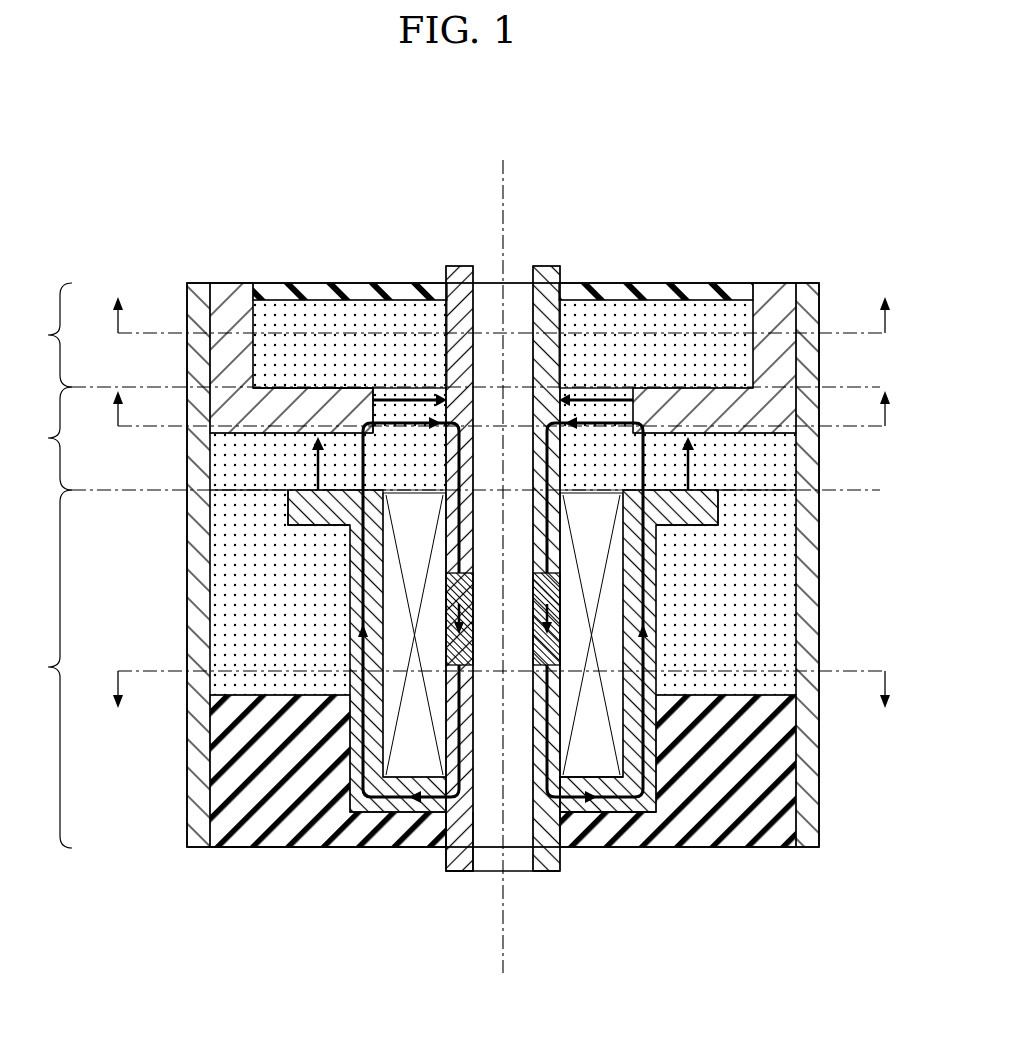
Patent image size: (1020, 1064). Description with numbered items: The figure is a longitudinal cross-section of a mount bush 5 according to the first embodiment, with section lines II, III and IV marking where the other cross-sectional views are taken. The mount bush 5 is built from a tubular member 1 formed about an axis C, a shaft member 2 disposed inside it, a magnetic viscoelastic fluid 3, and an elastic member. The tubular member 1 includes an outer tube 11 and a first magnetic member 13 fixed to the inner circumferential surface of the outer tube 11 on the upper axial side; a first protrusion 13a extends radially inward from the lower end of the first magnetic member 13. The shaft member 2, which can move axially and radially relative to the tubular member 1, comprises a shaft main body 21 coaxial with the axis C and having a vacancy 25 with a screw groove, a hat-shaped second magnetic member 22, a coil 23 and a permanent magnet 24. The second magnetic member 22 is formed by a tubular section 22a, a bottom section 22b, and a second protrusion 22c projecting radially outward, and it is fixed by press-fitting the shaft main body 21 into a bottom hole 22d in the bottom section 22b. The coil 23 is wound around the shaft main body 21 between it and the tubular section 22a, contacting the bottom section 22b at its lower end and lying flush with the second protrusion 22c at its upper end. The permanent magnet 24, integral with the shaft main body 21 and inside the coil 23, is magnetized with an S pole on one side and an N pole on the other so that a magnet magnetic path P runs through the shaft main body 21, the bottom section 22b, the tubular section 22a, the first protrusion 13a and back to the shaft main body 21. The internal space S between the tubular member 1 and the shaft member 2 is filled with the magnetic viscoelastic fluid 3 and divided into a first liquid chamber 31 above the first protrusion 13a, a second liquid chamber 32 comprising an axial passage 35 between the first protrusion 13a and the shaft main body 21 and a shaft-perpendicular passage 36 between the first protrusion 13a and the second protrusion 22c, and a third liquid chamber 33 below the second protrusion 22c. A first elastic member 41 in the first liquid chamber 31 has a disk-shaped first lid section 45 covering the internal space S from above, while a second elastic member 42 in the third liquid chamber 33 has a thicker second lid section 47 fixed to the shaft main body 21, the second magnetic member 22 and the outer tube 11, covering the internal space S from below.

The tubular member 1 is at (815, 281).
The shaft member 2 is at (551, 256).
The magnetic viscoelastic fluid 3 is at (772, 592).
The mount bush 5 is at (772, 224).
The outer tube 11 is at (197, 793).
The first magnetic member 13 is at (229, 276).
The first protrusion 13a is at (352, 398).
The shaft main body 21 is at (547, 862).
The second magnetic member 22 is at (653, 806).
The tubular section 22a is at (652, 775).
The bottom section 22b is at (606, 813).
The second protrusion 22c is at (690, 517).
The bottom hole 22d is at (468, 850).
The coil 23 is at (407, 764).
The permanent magnet 24 is at (450, 608).
The vacancy 25 is at (472, 312).
The first liquid chamber 31 is at (35, 349).
The second liquid chamber 32 is at (35, 451).
The third liquid chamber 33 is at (35, 677).
The axial passage 35 is at (603, 440).
The shaft-perpendicular passage 36 is at (673, 468).
The first elastic member 41 is at (307, 276).
The second elastic member 42 is at (294, 858).
The first lid section 45 is at (700, 276).
The second lid section 47 is at (773, 828).
The axis C is at (506, 186).
The magnet magnetic path P is at (647, 721).
The internal space S is at (733, 624).
The line II- II is at (501, 326).
The line III- III is at (499, 419).
The line IV- IV is at (503, 684).